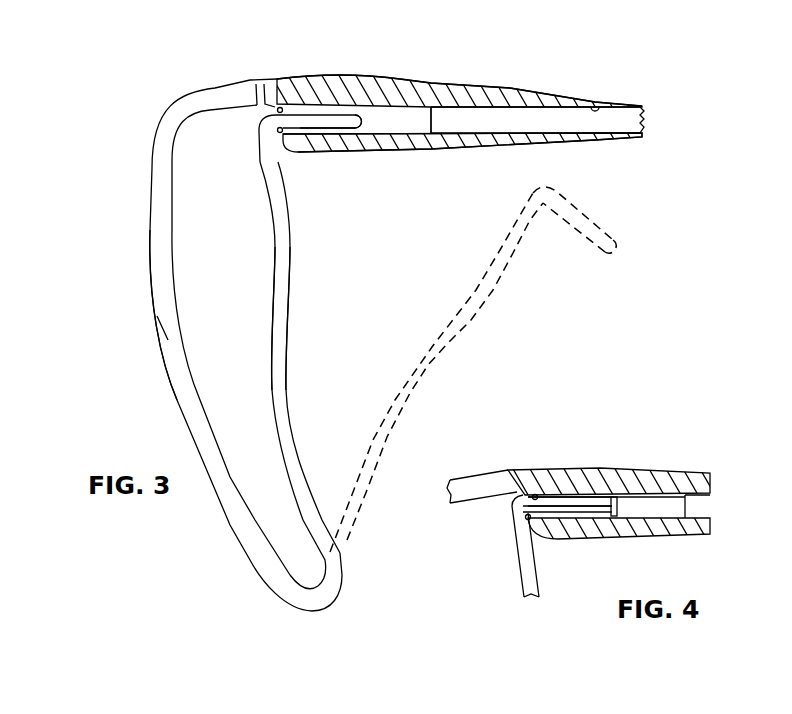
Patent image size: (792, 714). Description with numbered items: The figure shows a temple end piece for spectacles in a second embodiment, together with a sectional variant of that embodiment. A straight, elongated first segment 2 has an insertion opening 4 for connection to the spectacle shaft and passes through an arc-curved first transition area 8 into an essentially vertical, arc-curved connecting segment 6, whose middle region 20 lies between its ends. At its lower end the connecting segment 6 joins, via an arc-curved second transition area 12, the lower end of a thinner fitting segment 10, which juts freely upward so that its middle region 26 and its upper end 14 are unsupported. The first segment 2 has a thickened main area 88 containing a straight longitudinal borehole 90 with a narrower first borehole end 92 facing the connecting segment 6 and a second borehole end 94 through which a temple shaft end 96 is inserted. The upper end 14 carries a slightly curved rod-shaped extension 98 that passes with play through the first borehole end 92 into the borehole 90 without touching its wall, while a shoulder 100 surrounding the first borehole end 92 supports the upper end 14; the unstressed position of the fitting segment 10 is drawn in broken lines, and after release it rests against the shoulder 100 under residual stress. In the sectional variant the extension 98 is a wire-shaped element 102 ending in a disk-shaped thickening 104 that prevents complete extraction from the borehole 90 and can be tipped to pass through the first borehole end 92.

In FIG. 3, the first segment 2 is at (360, 78).
In FIG. 4, the first segment 2 is at (622, 466).
In FIG. 3, the insertion opening 4 is at (421, 105).
In FIG. 3, the connecting segment 6 is at (150, 303).
In FIG. 3, the first transition area 8 is at (178, 98).
In FIG. 3, the fitting segment 10 is at (290, 332).
In FIG. 3, the second transition area 12 is at (326, 602).
In FIG. 3, the upper end of the fitting segment 14 is at (252, 124).
In FIG. 3, the middle region 20 is at (168, 338).
In FIG. 3, the middle region of the fitting segment 26 is at (282, 385).
In FIG. 3, the thickened main area 88 is at (287, 77).
In FIG. 3, the borehole 90 is at (379, 140).
In FIG. 4, the borehole 90 is at (653, 516).
In FIG. 3, the first borehole end 92 is at (279, 106).
In FIG. 4, the first borehole end 92 is at (538, 494).
In FIG. 3, the second borehole end 94 is at (596, 104).
In FIG. 3, the temple shaft end 96 is at (612, 130).
In FIG. 4, the temple shaft end 96 is at (700, 508).
In FIG. 3, the extension 98 is at (323, 123).
In FIG. 4, the extension 98 is at (580, 498).
In FIG. 3, the shoulder 100 is at (278, 133).
In FIG. 4, the shoulder 100 is at (537, 533).
In FIG. 4, the wire-shaped element 102 is at (597, 513).
In FIG. 4, the disk-shaped thickening 104 is at (618, 503).